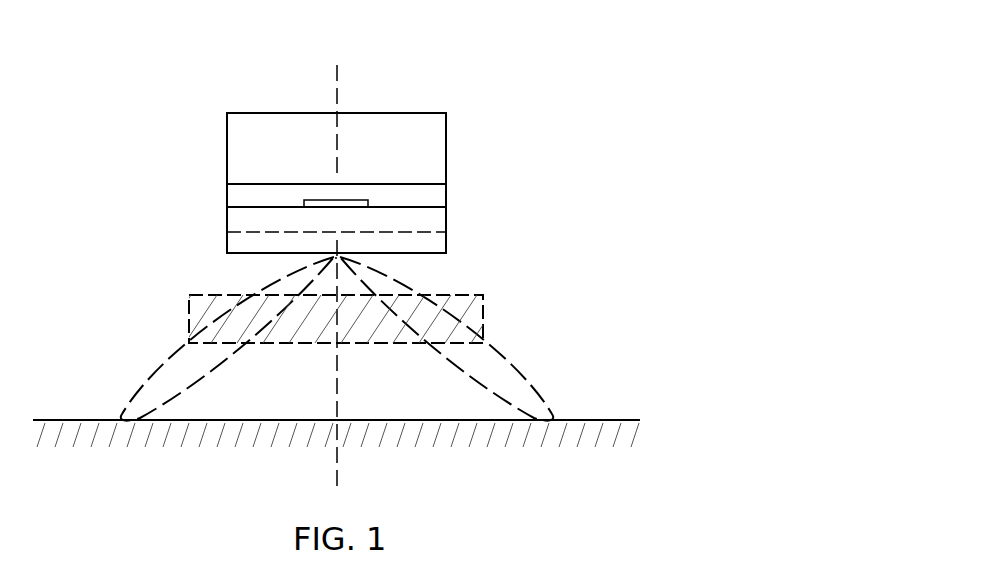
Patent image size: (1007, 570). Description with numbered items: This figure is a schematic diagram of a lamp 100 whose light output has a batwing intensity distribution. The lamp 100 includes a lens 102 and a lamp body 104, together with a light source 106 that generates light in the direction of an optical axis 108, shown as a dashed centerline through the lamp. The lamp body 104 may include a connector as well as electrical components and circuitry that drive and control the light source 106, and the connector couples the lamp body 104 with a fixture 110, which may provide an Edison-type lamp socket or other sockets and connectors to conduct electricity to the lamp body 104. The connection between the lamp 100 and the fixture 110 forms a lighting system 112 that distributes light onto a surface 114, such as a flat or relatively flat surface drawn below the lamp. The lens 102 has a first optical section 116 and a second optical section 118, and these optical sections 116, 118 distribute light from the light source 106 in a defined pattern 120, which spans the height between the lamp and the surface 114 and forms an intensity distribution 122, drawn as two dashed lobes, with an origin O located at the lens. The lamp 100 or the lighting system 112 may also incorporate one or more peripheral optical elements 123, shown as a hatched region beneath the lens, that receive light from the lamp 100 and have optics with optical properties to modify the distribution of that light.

The lamp 100 is at (550, 255).
The lens 102 is at (446, 238).
The lamp body 104 is at (446, 193).
The light source 106 is at (346, 199).
The optical axis 108 is at (338, 78).
The fixture 110 is at (446, 136).
The lighting system 112 is at (553, 41).
The surface 114 is at (640, 420).
The first optical section 116 is at (205, 230).
The second optical section 118 is at (216, 232).
The defined pattern 120 is at (600, 417).
The intensity distribution 122 is at (418, 351).
The peripheral optical elements 123 is at (188, 321).
The origin O is at (331, 270).